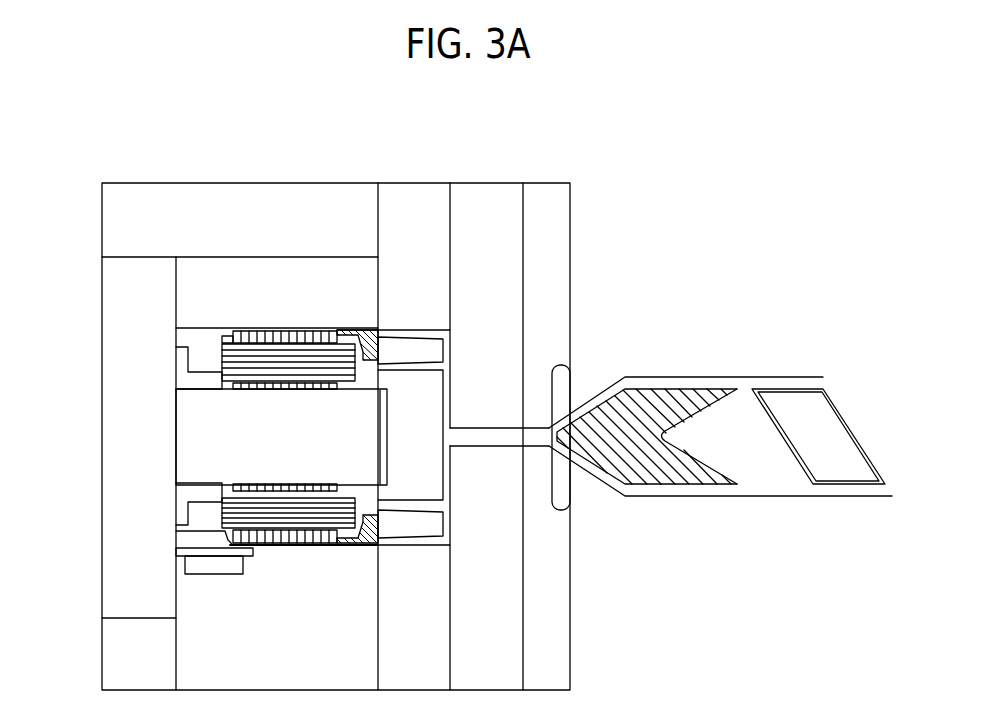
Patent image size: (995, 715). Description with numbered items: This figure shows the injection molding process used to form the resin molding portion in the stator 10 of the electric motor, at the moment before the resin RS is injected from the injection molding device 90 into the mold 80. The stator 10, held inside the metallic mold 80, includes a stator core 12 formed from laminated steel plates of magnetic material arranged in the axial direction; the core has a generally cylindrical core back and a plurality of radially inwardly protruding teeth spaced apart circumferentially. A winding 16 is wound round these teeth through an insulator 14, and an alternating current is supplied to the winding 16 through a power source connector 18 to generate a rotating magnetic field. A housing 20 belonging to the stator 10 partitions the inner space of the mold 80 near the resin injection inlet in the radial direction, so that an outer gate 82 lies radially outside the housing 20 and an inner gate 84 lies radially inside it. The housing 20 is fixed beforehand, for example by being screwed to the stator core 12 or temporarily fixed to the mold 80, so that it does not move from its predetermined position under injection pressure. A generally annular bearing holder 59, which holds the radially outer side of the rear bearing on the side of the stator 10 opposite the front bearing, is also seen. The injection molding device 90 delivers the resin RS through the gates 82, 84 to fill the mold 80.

The stator 10 is at (277, 298).
The stator core 12 is at (252, 333).
The insulator 14 is at (228, 384).
The winding 16 is at (236, 363).
The power source connector 18 is at (180, 565).
The housing 20 is at (358, 330).
The bearing holder 59 is at (176, 377).
The mold 80 is at (557, 270).
The outer gate 82 is at (420, 328).
The inner gate 84 is at (427, 364).
The injection molding device 90 is at (760, 378).
The resin RS is at (646, 405).